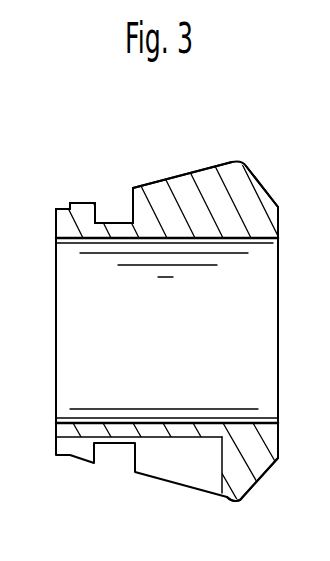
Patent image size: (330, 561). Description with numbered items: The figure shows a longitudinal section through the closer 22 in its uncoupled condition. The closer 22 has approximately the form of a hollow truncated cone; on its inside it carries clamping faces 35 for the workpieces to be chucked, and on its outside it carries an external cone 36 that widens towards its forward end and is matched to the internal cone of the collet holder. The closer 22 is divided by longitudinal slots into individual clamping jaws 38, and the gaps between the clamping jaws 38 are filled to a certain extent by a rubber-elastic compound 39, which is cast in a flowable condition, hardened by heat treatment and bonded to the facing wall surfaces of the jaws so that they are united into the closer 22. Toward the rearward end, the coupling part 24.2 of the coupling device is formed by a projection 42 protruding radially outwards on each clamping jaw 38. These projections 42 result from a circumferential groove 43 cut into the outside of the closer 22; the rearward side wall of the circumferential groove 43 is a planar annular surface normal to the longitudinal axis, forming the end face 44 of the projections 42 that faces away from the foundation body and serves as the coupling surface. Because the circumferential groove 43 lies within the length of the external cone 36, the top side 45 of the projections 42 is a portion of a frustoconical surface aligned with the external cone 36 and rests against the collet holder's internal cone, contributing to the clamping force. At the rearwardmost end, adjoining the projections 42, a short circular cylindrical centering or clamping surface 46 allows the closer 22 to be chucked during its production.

The closer 22 is at (271, 155).
The coupling part 24.2 is at (93, 164).
The clamping faces 35 is at (252, 243).
The external cone 36 is at (209, 167).
The clamping jaws 38 is at (262, 223).
The rubber-elastic compound 39 is at (253, 468).
The projection 42 is at (78, 216).
The circumferential groove 43 is at (120, 208).
The end face 44 is at (98, 206).
The top side 45 is at (80, 201).
The centering or clamping surface 46 is at (64, 206).